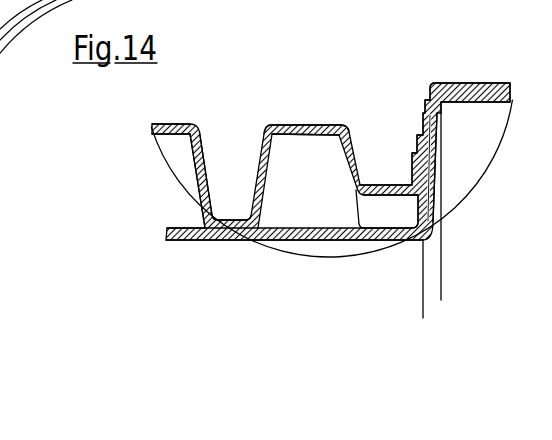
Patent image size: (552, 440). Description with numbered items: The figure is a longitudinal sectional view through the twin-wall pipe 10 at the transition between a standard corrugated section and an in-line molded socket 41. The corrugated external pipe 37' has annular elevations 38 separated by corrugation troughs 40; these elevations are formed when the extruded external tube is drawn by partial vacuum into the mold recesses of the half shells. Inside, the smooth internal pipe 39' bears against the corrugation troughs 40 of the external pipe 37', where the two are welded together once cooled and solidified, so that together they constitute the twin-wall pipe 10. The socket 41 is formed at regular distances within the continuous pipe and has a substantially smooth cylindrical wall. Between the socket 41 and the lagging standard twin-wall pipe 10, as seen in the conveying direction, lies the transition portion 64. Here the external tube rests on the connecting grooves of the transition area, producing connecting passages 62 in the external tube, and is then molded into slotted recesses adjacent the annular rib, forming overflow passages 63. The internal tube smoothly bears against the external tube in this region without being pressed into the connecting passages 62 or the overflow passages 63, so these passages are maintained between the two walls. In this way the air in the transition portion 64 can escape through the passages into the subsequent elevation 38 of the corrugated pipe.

The twin-wall pipe 10 is at (306, 110).
The transition portion 64 is at (404, 167).
The pipe socket 41 is at (489, 83).
The connecting passages 62 is at (433, 171).
The overflow passages 63 is at (383, 213).
The annular elevations 38 is at (169, 178).
The corrugation troughs 40 is at (233, 217).
The external pipe 37' is at (130, 122).
The internal pipe 39' is at (245, 253).